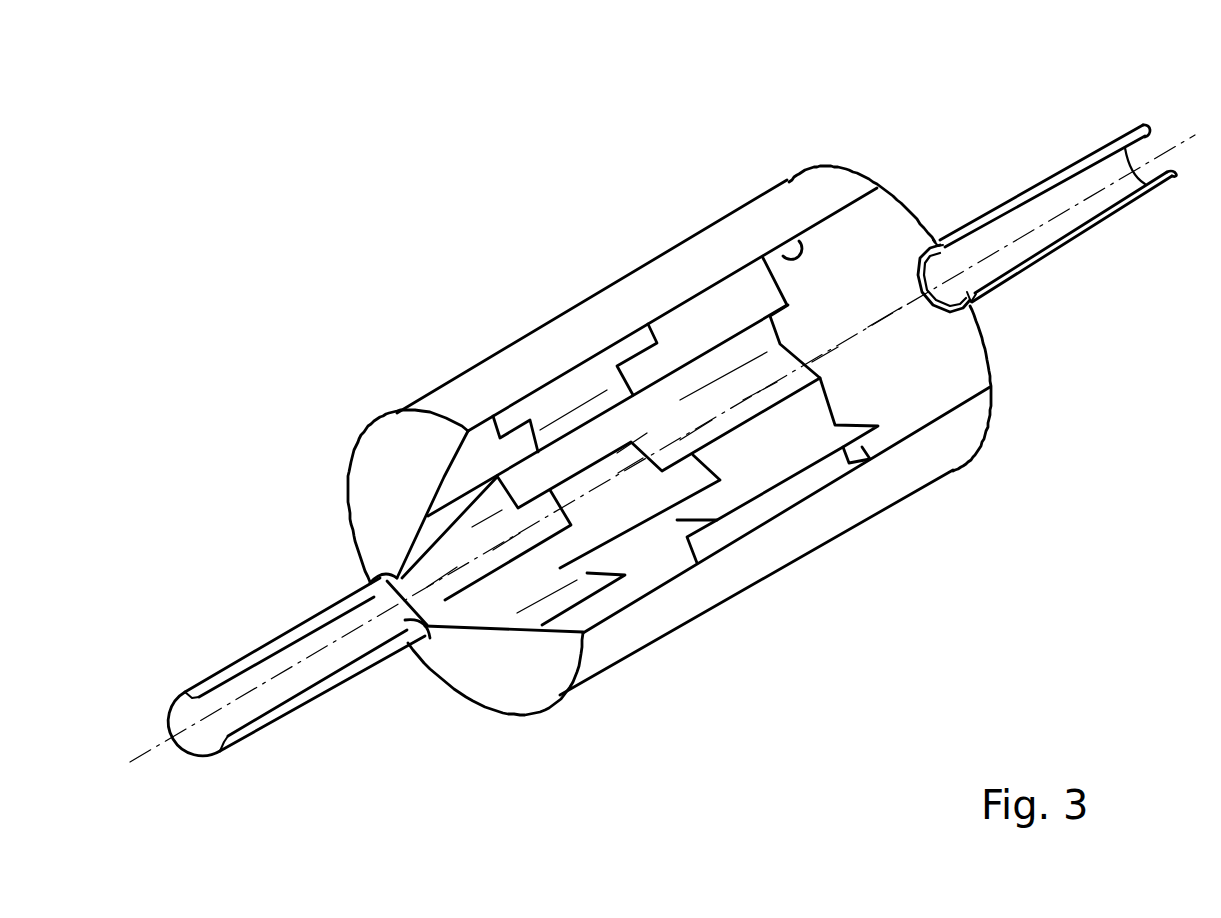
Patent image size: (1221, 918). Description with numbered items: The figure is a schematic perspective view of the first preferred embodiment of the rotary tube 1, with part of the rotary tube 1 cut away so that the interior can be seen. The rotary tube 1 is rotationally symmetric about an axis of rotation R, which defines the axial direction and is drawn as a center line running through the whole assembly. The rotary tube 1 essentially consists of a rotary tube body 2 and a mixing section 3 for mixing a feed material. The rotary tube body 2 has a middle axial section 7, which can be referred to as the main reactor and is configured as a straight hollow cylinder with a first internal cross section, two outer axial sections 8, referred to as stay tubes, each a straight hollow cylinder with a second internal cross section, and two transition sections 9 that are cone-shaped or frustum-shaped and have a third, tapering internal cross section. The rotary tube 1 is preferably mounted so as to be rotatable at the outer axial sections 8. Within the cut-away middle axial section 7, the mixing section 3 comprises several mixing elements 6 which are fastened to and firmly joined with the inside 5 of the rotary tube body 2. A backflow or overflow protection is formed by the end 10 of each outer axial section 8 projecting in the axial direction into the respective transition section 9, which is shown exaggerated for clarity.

The rotary tube 1 is at (314, 288).
The rotary tube body 2 is at (993, 203).
The mixing section 3 is at (655, 560).
The inside 5 is at (801, 248).
The mixing element 6 is at (470, 457).
The middle axial section 7 is at (817, 552).
The outer axial section 8 is at (1093, 237).
The transition section 9 is at (990, 368).
The end 10 is at (978, 332).
The axis of rotation R is at (1166, 153).